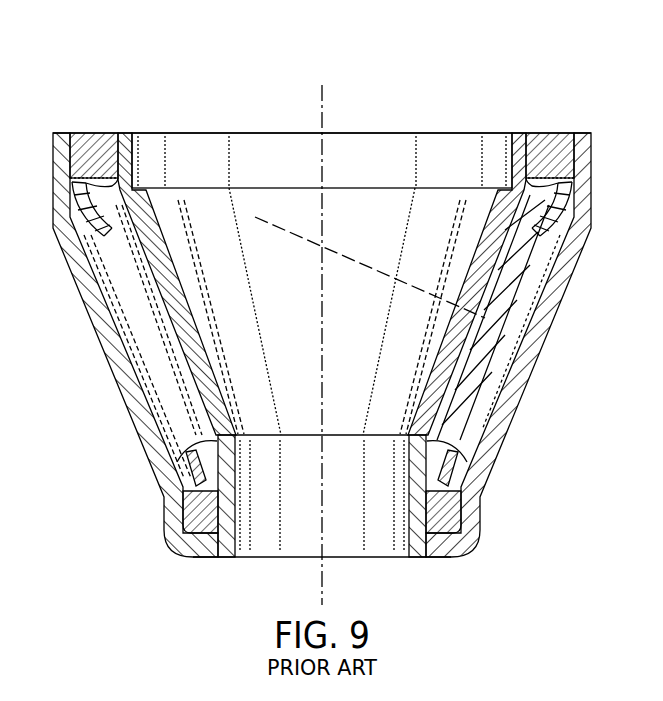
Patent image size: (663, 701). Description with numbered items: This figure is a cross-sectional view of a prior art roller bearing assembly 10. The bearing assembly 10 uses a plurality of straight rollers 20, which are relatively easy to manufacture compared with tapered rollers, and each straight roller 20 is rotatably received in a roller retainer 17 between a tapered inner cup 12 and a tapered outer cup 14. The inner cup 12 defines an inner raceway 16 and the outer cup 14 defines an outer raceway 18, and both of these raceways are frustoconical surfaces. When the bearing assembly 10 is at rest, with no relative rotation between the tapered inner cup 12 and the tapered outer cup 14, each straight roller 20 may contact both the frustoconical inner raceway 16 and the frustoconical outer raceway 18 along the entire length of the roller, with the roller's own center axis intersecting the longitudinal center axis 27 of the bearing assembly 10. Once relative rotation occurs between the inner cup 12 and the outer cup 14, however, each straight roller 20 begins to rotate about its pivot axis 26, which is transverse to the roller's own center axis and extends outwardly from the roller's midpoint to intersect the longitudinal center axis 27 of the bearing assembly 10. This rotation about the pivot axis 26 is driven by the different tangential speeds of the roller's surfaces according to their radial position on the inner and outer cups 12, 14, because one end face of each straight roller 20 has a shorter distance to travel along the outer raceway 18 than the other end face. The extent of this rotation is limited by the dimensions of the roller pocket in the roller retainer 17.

The bearing assembly 10 is at (79, 74).
The tapered inner cup 12 is at (204, 326).
The tapered outer cup 14 is at (551, 357).
The inner raceway 16 is at (154, 282).
The roller retainer 17 is at (67, 237).
The outer raceway 18 is at (543, 290).
The straight roller 20 is at (148, 353).
The pivot axis 26 is at (277, 223).
The central axis 27 is at (327, 110).